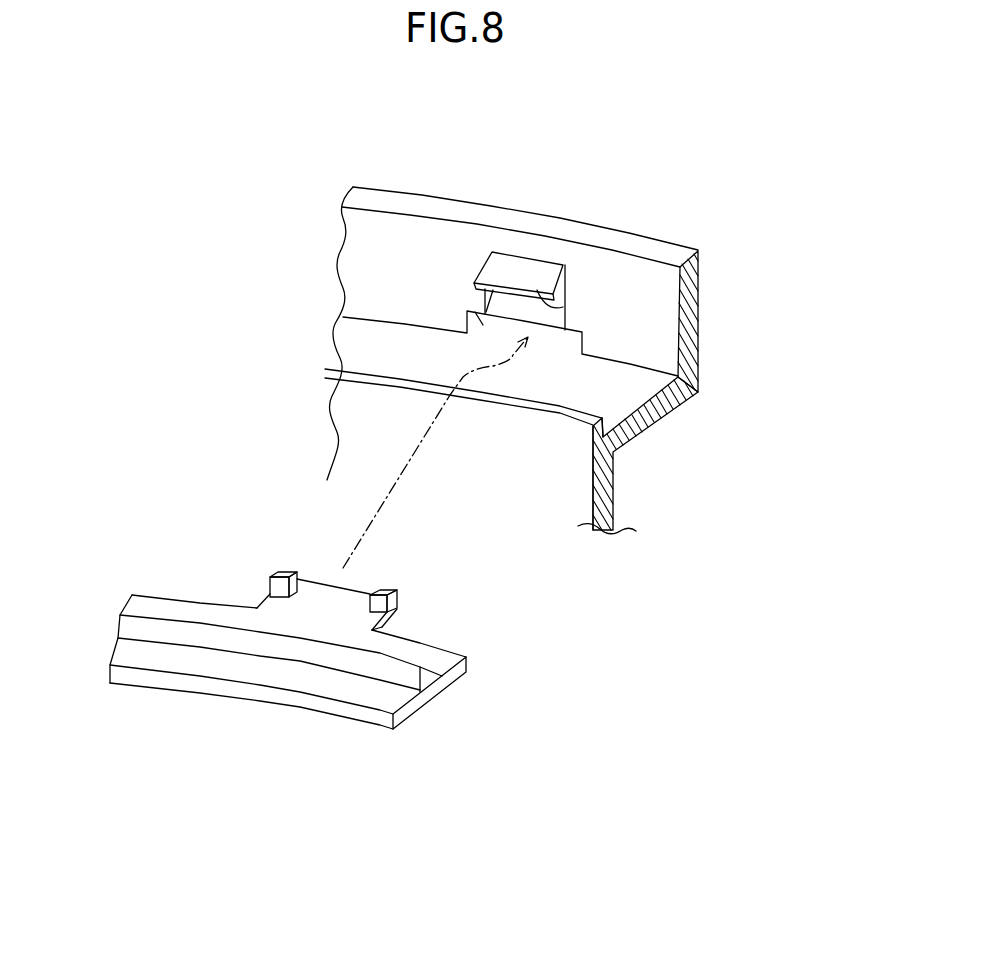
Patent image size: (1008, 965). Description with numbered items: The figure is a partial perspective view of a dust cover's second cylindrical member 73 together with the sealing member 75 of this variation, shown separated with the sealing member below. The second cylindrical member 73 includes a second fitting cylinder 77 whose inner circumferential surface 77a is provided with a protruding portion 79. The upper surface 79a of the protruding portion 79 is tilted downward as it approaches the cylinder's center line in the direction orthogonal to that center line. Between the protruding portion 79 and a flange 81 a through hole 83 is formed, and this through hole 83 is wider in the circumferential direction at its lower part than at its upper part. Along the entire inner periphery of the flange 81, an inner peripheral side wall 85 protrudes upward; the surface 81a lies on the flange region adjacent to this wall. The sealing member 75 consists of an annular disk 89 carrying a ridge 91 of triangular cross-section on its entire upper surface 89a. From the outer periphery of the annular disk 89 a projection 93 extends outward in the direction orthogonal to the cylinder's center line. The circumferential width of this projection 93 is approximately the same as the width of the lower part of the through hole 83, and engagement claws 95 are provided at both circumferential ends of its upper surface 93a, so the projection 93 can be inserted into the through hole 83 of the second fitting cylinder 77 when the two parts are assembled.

The second cylindrical member 73 is at (404, 168).
The sealing member 75 is at (231, 714).
The second fitting cylinder 77 is at (700, 318).
The inner circumferential surface 77a is at (628, 280).
The protruding portion 79 is at (485, 262).
The upper surface of the protruding portion 79a is at (513, 271).
The flange 81 is at (673, 410).
The recess floor surface 81a is at (358, 351).
The through hole 83 is at (538, 290).
The inner peripheral side wall 85 is at (632, 432).
The annular disk 89 is at (330, 708).
The upper surface of the annular disk 89a is at (172, 665).
The ridge 91 is at (166, 630).
The projection 93 is at (380, 625).
The upper surface of the projection 93a is at (343, 610).
The engagement claws 95 is at (285, 570).